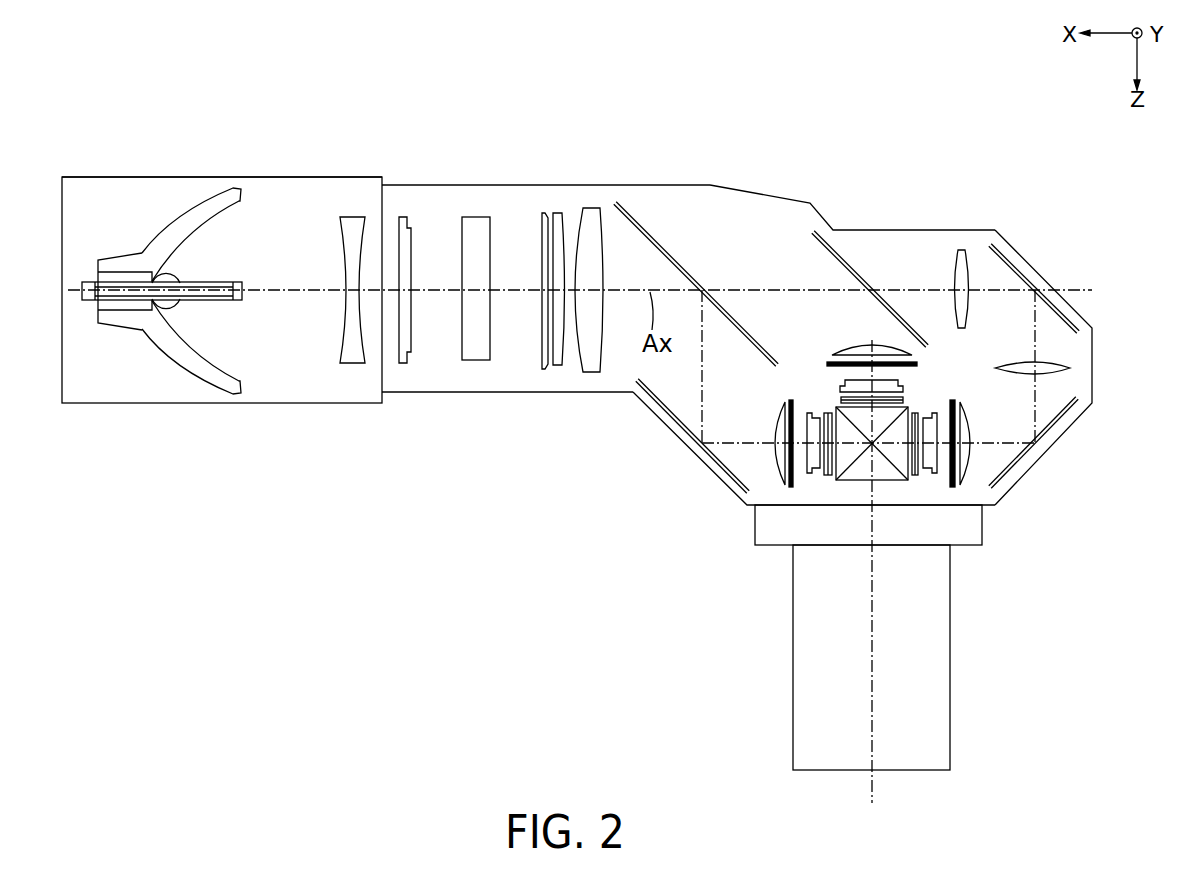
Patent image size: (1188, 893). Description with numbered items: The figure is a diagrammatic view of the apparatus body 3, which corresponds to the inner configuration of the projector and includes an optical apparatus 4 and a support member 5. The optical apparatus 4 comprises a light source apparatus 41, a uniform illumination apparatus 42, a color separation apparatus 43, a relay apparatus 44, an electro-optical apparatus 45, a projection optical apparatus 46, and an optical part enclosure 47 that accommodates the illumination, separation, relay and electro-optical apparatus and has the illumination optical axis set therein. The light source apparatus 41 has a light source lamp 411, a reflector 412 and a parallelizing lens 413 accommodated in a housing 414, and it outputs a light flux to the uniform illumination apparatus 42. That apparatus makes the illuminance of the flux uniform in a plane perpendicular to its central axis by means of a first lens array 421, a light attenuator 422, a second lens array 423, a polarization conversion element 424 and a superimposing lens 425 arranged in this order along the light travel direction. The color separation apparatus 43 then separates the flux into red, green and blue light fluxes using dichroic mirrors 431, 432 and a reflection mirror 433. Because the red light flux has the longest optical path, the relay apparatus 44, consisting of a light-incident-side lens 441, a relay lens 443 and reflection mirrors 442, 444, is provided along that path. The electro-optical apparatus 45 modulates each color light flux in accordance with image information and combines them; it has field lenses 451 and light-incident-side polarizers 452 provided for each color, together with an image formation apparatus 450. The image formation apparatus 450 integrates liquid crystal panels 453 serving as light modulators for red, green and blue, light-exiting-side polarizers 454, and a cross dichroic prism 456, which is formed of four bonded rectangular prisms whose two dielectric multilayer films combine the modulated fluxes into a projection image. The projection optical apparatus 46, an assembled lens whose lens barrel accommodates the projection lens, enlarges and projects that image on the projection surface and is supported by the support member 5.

The apparatus body 3 is at (130, 112).
The optical apparatus 4 is at (1037, 195).
The support member 5 is at (983, 527).
The light source apparatus 41 is at (218, 430).
The uniform illumination apparatus 42 is at (508, 218).
The color separation apparatus 43 is at (713, 232).
The relay apparatus 44 is at (930, 245).
The electro-optical apparatus 45 is at (782, 240).
The projection optical apparatus 46 is at (935, 650).
The optical part enclosure 47 is at (1073, 298).
The light source lamp 411 is at (165, 302).
The reflector 412 is at (195, 375).
The parallelizing lens 413 is at (350, 368).
The housing 414 is at (275, 177).
The first lens array 421 is at (405, 355).
The light attenuator 422 is at (475, 362).
The second lens array 423 is at (540, 347).
The polarization conversion element 424 is at (565, 363).
The superimposing lens 425 is at (592, 362).
The dichroic mirror 431 is at (655, 240).
The dichroic mirror 432 is at (858, 255).
The reflection mirror 433 is at (722, 465).
The light-incident-side lens 441 is at (960, 252).
The reflection mirror 442 is at (1015, 270).
The relay lens 443 is at (1062, 365).
The reflection mirror 444 is at (1013, 470).
The image formation apparatus 450 is at (938, 488).
The field lens 451 is at (855, 345).
The light-incident-side polarizer 452 is at (905, 362).
The liquid crystal panel 453 is at (767, 565).
The light-exiting-side polarizer 454 is at (905, 402).
The cross dichroic prism 456 is at (838, 405).